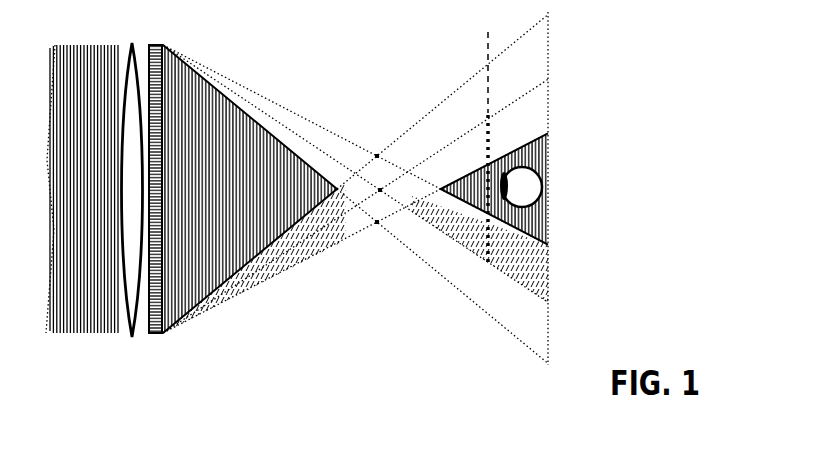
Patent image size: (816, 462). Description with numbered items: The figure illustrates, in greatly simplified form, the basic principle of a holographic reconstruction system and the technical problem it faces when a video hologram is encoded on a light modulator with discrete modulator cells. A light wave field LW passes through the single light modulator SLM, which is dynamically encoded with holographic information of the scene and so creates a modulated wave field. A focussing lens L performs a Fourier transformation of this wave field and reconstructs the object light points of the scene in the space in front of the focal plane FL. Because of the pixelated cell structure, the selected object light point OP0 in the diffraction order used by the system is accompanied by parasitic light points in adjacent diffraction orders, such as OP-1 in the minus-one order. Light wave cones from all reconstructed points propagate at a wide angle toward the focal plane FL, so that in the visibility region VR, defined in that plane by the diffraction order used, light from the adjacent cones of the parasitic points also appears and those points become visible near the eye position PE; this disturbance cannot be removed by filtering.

The light wave field LW is at (66, 212).
The focussing lens L is at (131, 177).
The light modulator SLM is at (172, 212).
The object light point OP0 is at (390, 196).
The parasitic light point OP-1 is at (376, 227).
The visibility region VR is at (464, 172).
The focal plane FL is at (467, 146).
The observer eye pupil PE is at (528, 238).